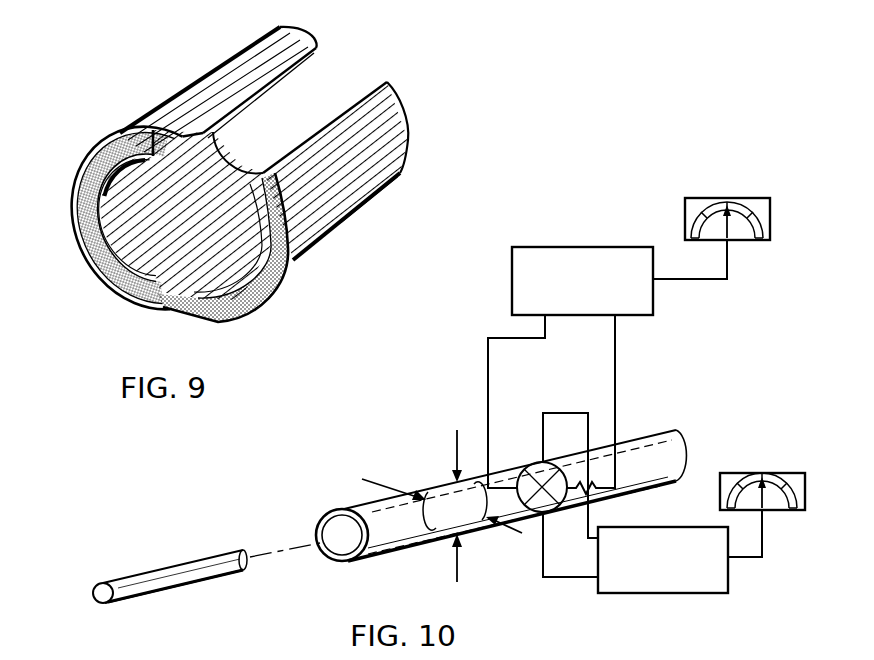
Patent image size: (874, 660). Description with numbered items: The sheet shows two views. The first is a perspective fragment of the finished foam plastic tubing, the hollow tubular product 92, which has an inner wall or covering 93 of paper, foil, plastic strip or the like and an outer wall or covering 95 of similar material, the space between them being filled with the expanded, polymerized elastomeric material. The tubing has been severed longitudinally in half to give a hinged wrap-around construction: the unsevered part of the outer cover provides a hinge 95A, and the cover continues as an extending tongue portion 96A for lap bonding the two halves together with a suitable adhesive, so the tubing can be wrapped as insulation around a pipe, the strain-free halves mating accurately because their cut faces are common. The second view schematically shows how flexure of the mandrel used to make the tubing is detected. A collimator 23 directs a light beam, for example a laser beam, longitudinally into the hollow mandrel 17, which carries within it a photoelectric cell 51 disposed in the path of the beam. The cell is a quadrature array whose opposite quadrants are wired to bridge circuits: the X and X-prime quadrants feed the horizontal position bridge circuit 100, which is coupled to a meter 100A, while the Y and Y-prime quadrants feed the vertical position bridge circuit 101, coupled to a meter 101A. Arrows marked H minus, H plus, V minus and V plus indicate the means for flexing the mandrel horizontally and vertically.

In FIG. 9, the hollow tubular product 92 is at (90, 250).
In FIG. 9, the inner wall or covering 93 is at (98, 187).
In FIG. 9, the outer wall or covering 95 is at (75, 214).
In FIG. 9, the hinge 95A is at (166, 308).
In FIG. 9, the extending tongue portion 96A is at (285, 62).
In FIG. 10, the hollow mandrel 17 is at (398, 552).
In FIG. 10, the collimator 23 is at (173, 591).
In FIG. 10, the photoelectric cell 51 is at (538, 462).
In FIG. 10, the bridge circuit (horizontal position) 100 is at (577, 247).
In FIG. 10, the meter 100A is at (770, 223).
In FIG. 10, the bridge circuit (vertical position) 101 is at (728, 586).
In FIG. 10, the meter 101A is at (805, 491).